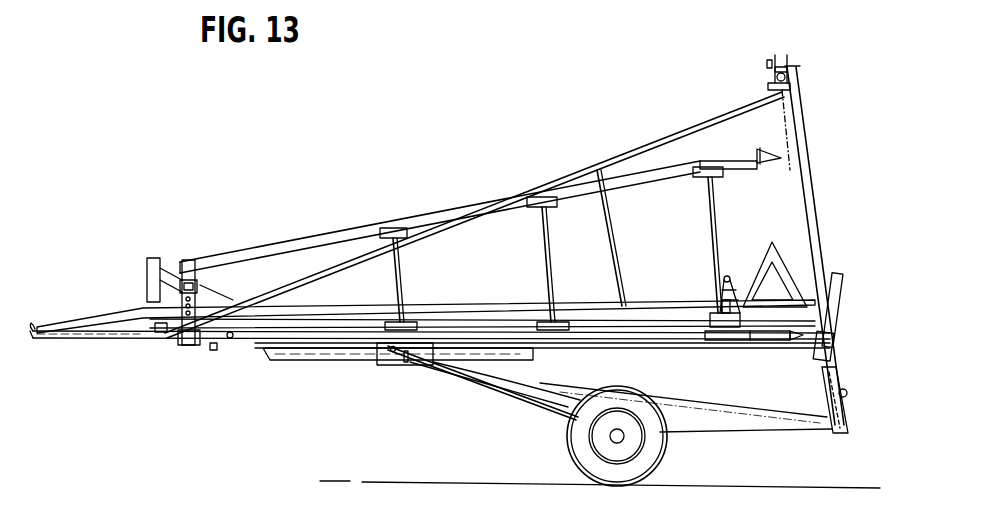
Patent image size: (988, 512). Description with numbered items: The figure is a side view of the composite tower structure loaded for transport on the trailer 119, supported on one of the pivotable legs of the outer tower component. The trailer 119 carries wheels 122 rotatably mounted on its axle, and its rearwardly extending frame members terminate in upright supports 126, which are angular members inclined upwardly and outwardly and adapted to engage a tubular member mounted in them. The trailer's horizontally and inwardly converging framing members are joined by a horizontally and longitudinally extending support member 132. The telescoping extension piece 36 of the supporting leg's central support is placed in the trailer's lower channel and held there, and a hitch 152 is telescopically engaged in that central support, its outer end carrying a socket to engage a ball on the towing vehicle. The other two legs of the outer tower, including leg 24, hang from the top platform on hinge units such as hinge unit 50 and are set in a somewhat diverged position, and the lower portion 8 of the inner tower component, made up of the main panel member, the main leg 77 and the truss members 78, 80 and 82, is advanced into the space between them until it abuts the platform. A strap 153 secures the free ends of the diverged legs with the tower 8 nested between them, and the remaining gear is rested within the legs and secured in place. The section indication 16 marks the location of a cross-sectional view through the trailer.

The lower portion of the inner tower component 8 is at (290, 238).
The leg 24 is at (642, 151).
The telescoping extension piece 36 is at (337, 356).
The hinge unit 50 is at (767, 66).
The main leg 77 is at (682, 178).
The truss member 78 is at (402, 250).
The truss member 80 is at (541, 225).
The truss member 82 is at (715, 190).
The trailer 119 is at (552, 414).
The wheel 122 is at (652, 453).
The upright support 126 is at (848, 401).
The horizontally and longitudinally extending support member 132 is at (396, 360).
The hitch 152 is at (103, 339).
The strap 153 is at (186, 259).
The section line 16 is at (425, 330).